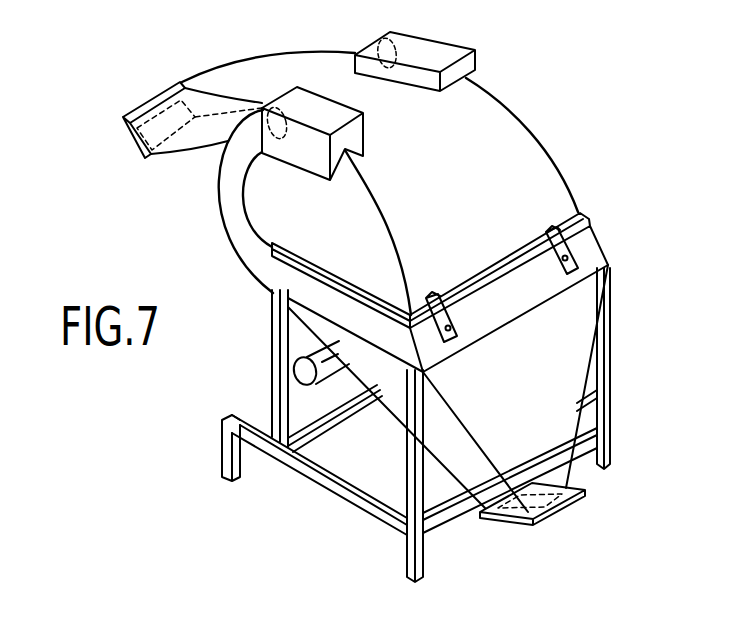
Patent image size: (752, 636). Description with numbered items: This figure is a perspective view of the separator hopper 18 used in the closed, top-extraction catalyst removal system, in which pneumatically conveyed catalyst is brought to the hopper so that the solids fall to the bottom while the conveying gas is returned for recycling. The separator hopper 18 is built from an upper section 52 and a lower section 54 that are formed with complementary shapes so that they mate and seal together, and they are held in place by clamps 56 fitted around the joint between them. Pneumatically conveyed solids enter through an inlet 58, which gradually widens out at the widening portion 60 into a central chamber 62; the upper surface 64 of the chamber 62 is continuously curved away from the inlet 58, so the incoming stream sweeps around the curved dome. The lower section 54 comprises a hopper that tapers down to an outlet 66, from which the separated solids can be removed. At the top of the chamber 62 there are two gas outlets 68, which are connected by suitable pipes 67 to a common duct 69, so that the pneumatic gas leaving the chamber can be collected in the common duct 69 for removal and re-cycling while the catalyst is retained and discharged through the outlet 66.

The separator hopper 18 is at (498, 61).
The upper section 52 is at (528, 182).
The lower section 54 is at (490, 428).
The clamps 56 is at (560, 276).
The inlet 58 is at (123, 118).
The widening portion 60 is at (292, 46).
The central chamber 62 is at (571, 201).
The upper surface 64 is at (470, 257).
The outlet 66 is at (543, 520).
The pipes 67 is at (222, 233).
The gas outlets 68 is at (363, 128).
The common duct 69 is at (302, 371).